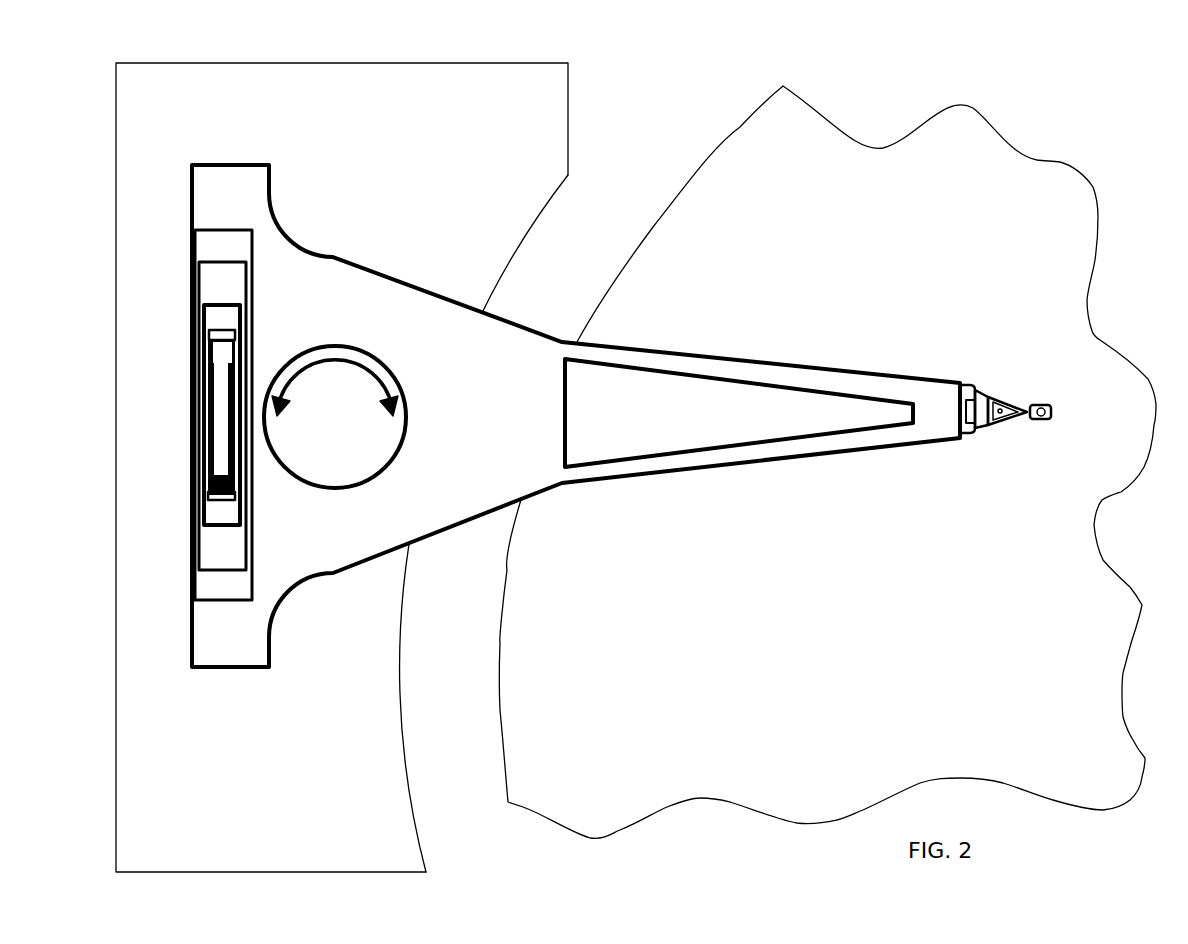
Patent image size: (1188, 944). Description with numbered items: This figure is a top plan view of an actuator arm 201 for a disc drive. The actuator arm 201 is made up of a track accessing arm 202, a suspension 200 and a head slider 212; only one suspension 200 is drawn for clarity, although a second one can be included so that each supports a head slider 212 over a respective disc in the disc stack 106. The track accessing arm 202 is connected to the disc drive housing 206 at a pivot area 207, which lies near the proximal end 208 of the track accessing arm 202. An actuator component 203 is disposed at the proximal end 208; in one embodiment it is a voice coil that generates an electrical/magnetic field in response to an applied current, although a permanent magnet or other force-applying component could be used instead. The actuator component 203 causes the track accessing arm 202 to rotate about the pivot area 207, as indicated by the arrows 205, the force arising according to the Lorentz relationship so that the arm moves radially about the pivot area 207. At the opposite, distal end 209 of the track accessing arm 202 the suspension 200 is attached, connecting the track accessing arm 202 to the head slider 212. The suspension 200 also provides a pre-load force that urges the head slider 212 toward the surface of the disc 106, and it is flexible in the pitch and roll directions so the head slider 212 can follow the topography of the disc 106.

The disc 106 is at (952, 180).
The suspension 200 is at (988, 397).
The actuator arm 201 is at (828, 195).
The track accessing arm 202 is at (392, 255).
The actuator component 203 is at (200, 351).
The arrows 205 is at (308, 367).
The disc drive housing 206 is at (449, 88).
The pivot area 207 is at (332, 345).
The proximal end 208 is at (193, 643).
The distal end 209 is at (960, 433).
The head slider 212 is at (1052, 412).